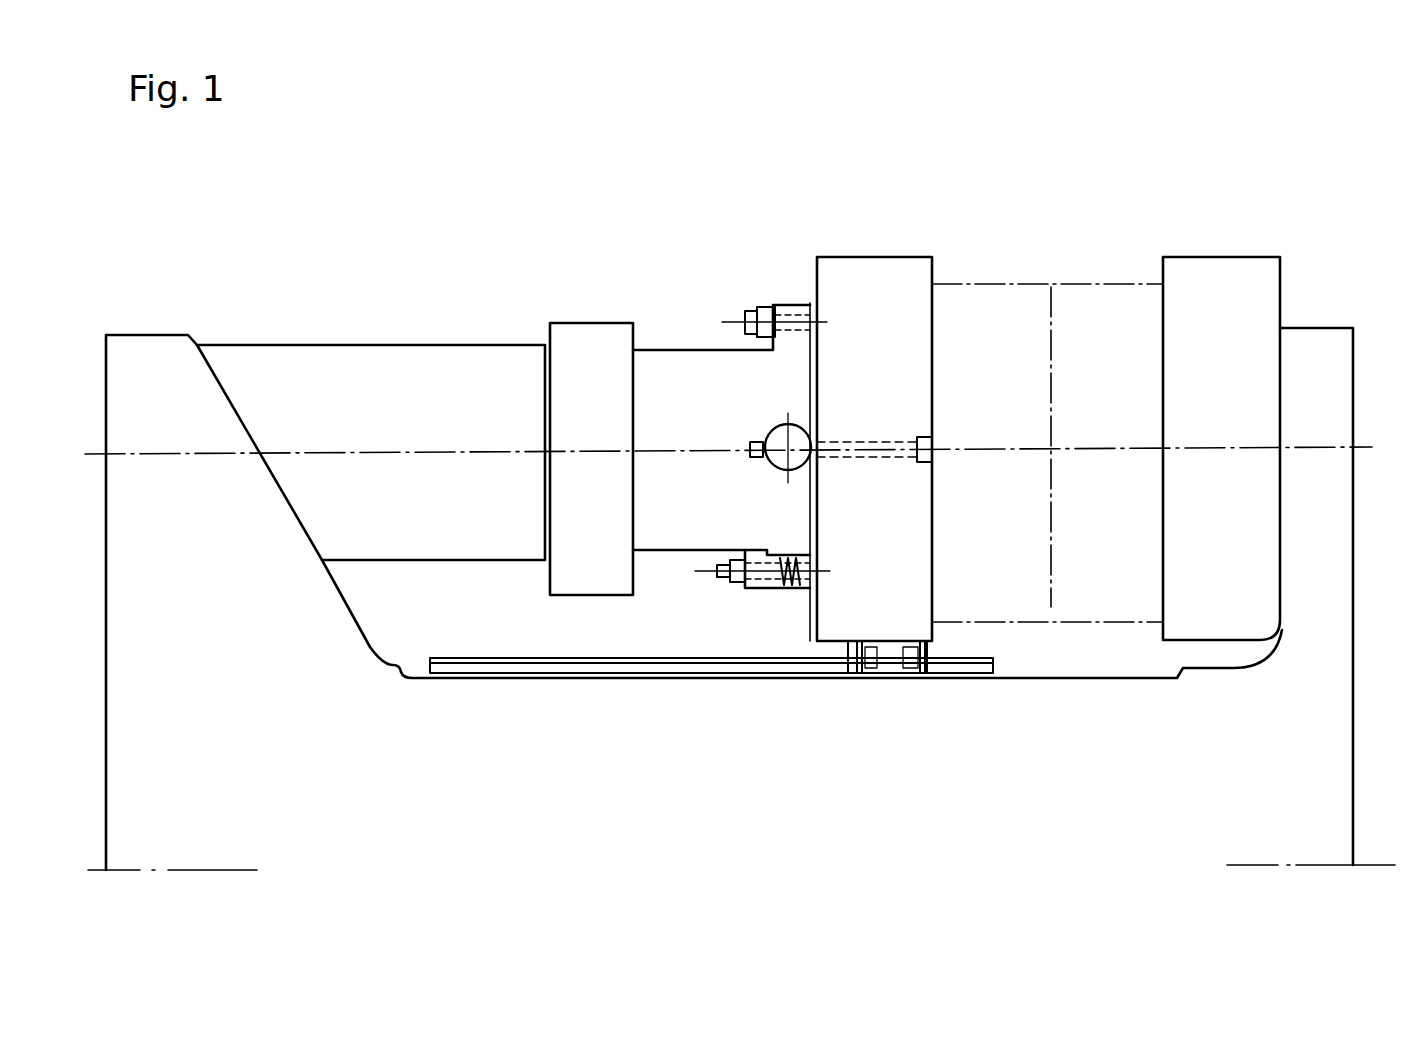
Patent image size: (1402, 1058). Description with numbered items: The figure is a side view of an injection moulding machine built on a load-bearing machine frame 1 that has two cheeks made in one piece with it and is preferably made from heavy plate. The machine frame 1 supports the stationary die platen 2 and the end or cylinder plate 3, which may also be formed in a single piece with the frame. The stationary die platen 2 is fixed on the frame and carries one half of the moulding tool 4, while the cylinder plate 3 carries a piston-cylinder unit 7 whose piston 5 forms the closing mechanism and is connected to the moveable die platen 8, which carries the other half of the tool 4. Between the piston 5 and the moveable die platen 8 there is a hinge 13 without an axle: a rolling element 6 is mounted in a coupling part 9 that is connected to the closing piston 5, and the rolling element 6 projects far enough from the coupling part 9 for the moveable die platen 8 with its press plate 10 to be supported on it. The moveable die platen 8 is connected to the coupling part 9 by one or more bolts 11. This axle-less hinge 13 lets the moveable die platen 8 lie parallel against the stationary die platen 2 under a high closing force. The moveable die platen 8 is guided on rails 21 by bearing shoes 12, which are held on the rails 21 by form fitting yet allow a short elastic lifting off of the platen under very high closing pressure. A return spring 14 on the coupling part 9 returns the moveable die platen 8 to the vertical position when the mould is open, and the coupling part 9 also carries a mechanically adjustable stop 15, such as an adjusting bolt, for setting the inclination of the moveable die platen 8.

The machine frame 1 is at (222, 820).
The stationary die platen 2 is at (1232, 277).
The end or cylinder plate 3 is at (148, 348).
The tool 4 is at (1108, 585).
The piston 5 is at (347, 372).
The rolling element 6 is at (770, 455).
The piston-cylinder unit 7 is at (243, 330).
The moveable die platen 8 is at (915, 303).
The coupling part 9 is at (677, 400).
The press plate 10 is at (817, 438).
The bolt 11 is at (932, 433).
The bearing shoe 12 is at (920, 667).
The hinge 13 is at (812, 410).
The return spring 14 is at (800, 588).
The mechanically adjustable stop 15 is at (762, 307).
The rails 21 is at (978, 662).